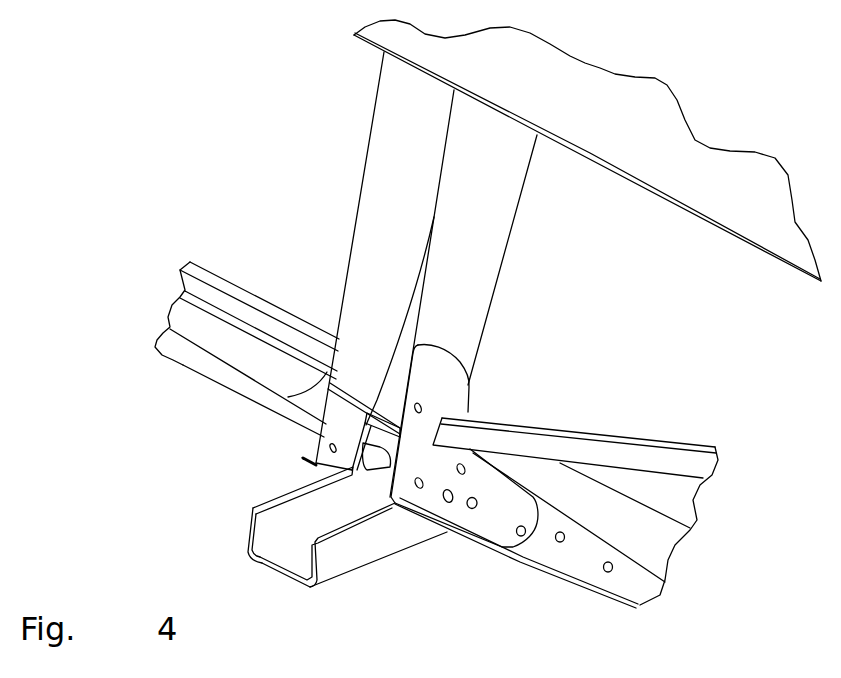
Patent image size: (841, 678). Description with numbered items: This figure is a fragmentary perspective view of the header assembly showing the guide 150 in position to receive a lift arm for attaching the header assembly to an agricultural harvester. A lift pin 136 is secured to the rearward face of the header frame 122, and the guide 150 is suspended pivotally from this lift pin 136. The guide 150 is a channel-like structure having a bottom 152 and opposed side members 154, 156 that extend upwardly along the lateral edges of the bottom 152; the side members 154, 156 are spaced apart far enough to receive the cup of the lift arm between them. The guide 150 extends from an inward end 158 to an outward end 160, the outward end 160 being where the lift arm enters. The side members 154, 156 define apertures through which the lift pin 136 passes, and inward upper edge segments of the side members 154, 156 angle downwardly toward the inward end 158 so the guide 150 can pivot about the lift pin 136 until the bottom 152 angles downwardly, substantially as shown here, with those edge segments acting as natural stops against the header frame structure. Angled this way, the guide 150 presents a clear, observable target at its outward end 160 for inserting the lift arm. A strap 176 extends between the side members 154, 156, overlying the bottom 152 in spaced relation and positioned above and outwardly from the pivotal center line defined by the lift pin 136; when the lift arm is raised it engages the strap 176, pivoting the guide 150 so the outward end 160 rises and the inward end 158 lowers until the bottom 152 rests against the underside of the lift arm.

The header frame 122 is at (493, 270).
The lift pin 136 is at (372, 460).
The guide 150 is at (291, 563).
The bottom 152 is at (277, 572).
The side member 154 is at (248, 515).
The side member 156 is at (320, 563).
The inward end 158 is at (450, 536).
The outward end 160 is at (297, 590).
The strap 176 is at (317, 427).